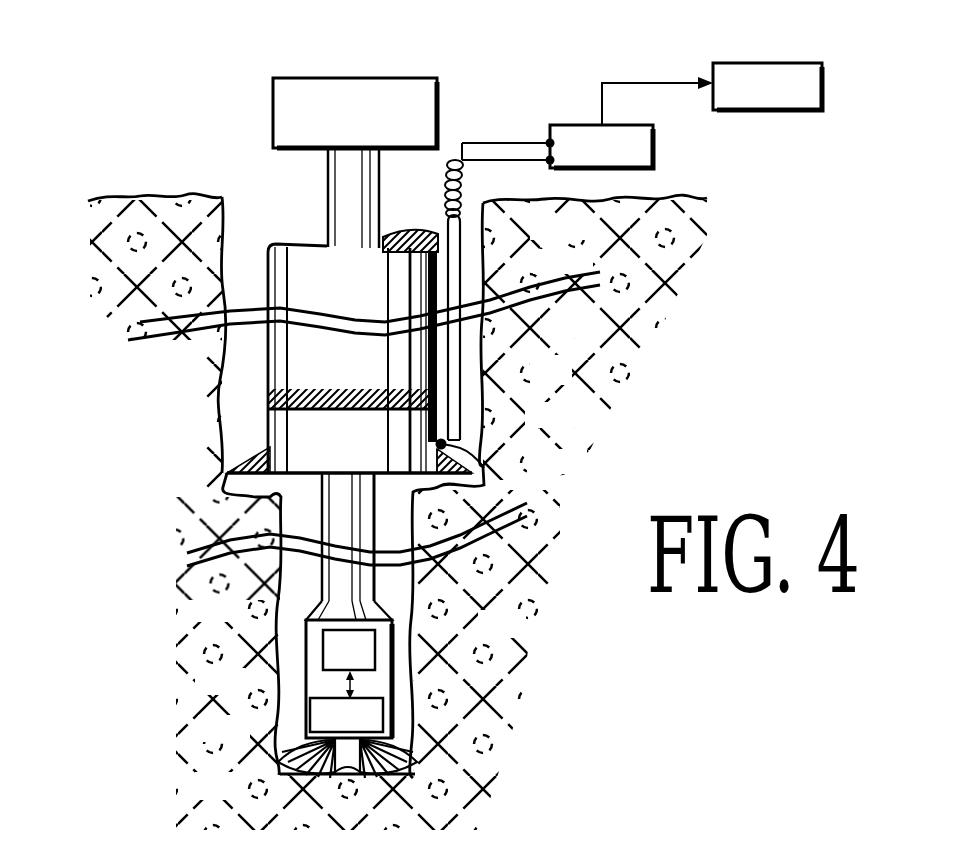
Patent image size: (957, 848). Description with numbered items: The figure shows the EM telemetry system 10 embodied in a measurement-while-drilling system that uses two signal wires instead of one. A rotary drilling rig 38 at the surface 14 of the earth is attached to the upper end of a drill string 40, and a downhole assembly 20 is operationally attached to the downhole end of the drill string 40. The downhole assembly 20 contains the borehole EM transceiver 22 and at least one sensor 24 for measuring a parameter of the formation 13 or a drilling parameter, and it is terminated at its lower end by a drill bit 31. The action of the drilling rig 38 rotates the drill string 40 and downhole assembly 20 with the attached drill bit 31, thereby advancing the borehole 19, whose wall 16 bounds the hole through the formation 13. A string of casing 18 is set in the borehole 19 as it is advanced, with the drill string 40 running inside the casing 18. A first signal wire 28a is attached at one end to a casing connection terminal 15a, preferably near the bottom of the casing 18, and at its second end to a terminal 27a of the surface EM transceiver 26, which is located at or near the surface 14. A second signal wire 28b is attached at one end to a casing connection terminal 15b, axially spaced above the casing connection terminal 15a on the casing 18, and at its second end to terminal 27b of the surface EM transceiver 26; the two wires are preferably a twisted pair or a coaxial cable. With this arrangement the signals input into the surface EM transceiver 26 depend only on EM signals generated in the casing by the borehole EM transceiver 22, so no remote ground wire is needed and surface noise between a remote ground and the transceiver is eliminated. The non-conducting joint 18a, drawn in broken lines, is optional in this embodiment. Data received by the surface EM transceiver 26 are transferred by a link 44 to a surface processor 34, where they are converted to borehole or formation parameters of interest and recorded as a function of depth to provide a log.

The EM telemetry system 10 is at (470, 83).
The formation 13 is at (190, 428).
The surface 14 is at (157, 195).
The casing connection terminal 15a is at (486, 464).
The casing connection terminal 15b is at (451, 241).
The wall 16 is at (224, 228).
The casing 18 is at (265, 273).
The non-conducting joint 18a is at (268, 393).
The borehole 19 is at (478, 346).
The downhole assembly 20 is at (418, 654).
The borehole EM transceiver 22 is at (323, 648).
The sensor 24 is at (310, 717).
The surface EM transceiver 26 is at (656, 142).
The terminal 27a is at (548, 141).
The terminal 27b is at (549, 161).
The first signal wire 28a is at (457, 236).
The second signal wire 28b is at (444, 222).
The drill bit 31 is at (285, 750).
The surface processor 34 is at (822, 88).
The rotary drilling rig 38 is at (290, 113).
The drill string 40 is at (343, 189).
The link 44 is at (628, 82).